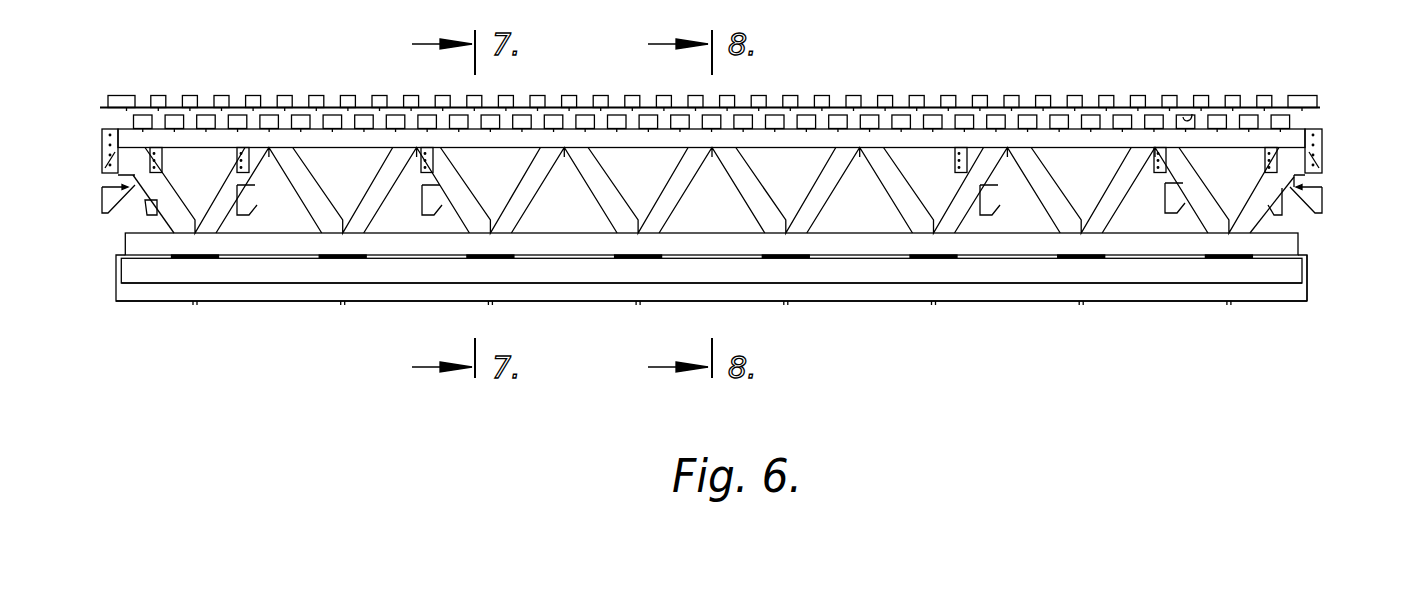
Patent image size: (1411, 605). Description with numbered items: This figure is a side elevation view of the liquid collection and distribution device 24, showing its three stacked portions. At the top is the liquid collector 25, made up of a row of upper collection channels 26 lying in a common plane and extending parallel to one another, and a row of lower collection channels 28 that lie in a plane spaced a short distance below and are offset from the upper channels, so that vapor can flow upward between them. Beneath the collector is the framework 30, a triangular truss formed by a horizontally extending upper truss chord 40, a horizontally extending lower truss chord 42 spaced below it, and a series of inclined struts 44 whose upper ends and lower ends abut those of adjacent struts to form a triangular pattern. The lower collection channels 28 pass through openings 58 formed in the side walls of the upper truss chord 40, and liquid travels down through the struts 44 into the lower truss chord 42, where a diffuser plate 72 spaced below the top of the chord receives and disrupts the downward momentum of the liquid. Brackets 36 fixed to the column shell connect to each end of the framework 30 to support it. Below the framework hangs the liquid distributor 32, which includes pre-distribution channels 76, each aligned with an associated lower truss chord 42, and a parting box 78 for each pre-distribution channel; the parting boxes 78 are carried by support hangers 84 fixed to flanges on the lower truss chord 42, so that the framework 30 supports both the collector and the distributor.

The liquid collection and distribution device 24 is at (711, 316).
The liquid collector 25 is at (710, 80).
The upper collection channels 26 is at (1045, 103).
The lower collection channels 28 is at (1155, 122).
The framework 30 is at (745, 193).
The liquid distributor 32 is at (1161, 302).
The brackets 36 is at (1317, 200).
The upper truss chord 40 is at (1167, 142).
The lower truss chord 42 is at (1125, 245).
The struts 44 is at (972, 187).
The openings 58 is at (1192, 114).
The diffuser plate 72 is at (1067, 255).
The pre-distribution channels 76 is at (997, 272).
The parting box 78 is at (1095, 292).
The support hangers 84 is at (785, 302).